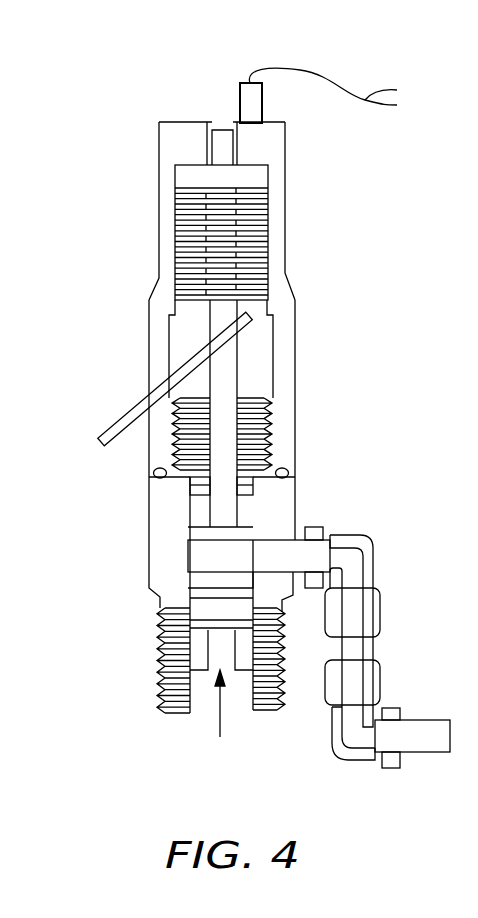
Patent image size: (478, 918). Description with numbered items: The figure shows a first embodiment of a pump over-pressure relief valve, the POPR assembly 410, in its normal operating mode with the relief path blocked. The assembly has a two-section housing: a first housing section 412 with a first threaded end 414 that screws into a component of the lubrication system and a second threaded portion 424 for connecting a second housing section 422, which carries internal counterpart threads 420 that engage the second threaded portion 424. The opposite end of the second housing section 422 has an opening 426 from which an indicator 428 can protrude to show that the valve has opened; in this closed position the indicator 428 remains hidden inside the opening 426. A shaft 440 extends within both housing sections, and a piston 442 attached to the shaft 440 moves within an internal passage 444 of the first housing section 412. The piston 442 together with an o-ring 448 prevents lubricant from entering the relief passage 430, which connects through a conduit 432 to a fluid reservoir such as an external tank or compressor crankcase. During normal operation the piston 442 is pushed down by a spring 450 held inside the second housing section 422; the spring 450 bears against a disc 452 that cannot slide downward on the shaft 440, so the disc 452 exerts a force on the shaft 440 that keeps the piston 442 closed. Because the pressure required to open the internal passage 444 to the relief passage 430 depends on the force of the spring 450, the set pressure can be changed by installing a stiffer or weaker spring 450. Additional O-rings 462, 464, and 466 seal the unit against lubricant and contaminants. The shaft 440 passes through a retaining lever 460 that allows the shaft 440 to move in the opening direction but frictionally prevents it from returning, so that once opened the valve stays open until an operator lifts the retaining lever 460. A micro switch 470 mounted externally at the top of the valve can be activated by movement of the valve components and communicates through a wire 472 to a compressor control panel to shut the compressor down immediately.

The POPR assembly 410 is at (84, 156).
The first housing section 412 is at (293, 490).
The first threaded end 414 is at (158, 703).
The internal counterpart threads 420 is at (270, 422).
The second housing section 422 is at (285, 165).
The second threaded portion 424 is at (270, 458).
The opening 426 is at (232, 128).
The indicator 428 is at (207, 128).
The relief passage 430 is at (263, 548).
The conduit 432 is at (365, 653).
The shaft 440 is at (240, 375).
The piston 442 is at (188, 565).
The internal passage 444 is at (198, 608).
The o-ring 448 is at (189, 597).
The spring 450 is at (263, 222).
The disc 452 is at (267, 295).
The retaining lever 460 is at (122, 418).
The O-ring 462 is at (187, 482).
The O-ring 464 is at (188, 535).
The O-ring 466 is at (215, 632).
The micro switch 470 is at (262, 112).
The wire 472 is at (344, 86).